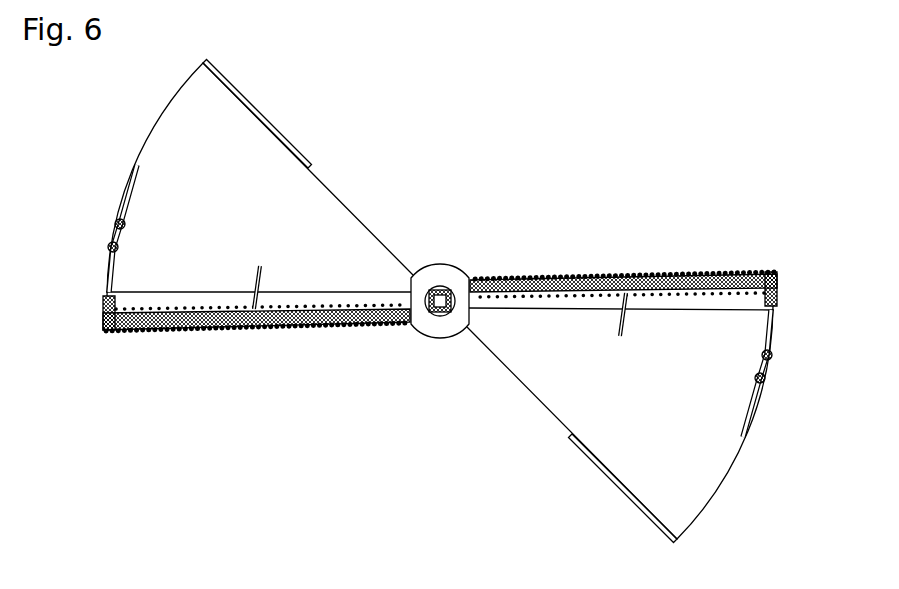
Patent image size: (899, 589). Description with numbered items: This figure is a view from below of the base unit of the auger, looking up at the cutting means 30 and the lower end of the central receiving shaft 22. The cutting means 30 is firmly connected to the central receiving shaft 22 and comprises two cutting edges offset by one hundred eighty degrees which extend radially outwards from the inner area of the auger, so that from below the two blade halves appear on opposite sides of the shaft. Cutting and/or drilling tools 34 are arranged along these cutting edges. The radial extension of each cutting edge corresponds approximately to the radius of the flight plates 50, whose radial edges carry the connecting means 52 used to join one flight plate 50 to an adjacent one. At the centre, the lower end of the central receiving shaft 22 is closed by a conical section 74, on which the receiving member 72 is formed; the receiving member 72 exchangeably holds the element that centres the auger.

The flight plate 50 is at (228, 222).
The connecting means 52 is at (297, 157).
The cutting and/or drilling tools 34 is at (110, 228).
The cutting means 30 is at (184, 297).
The conical section 74 is at (428, 277).
The central receiving shaft 22 is at (448, 278).
The receiving member 72 is at (440, 313).